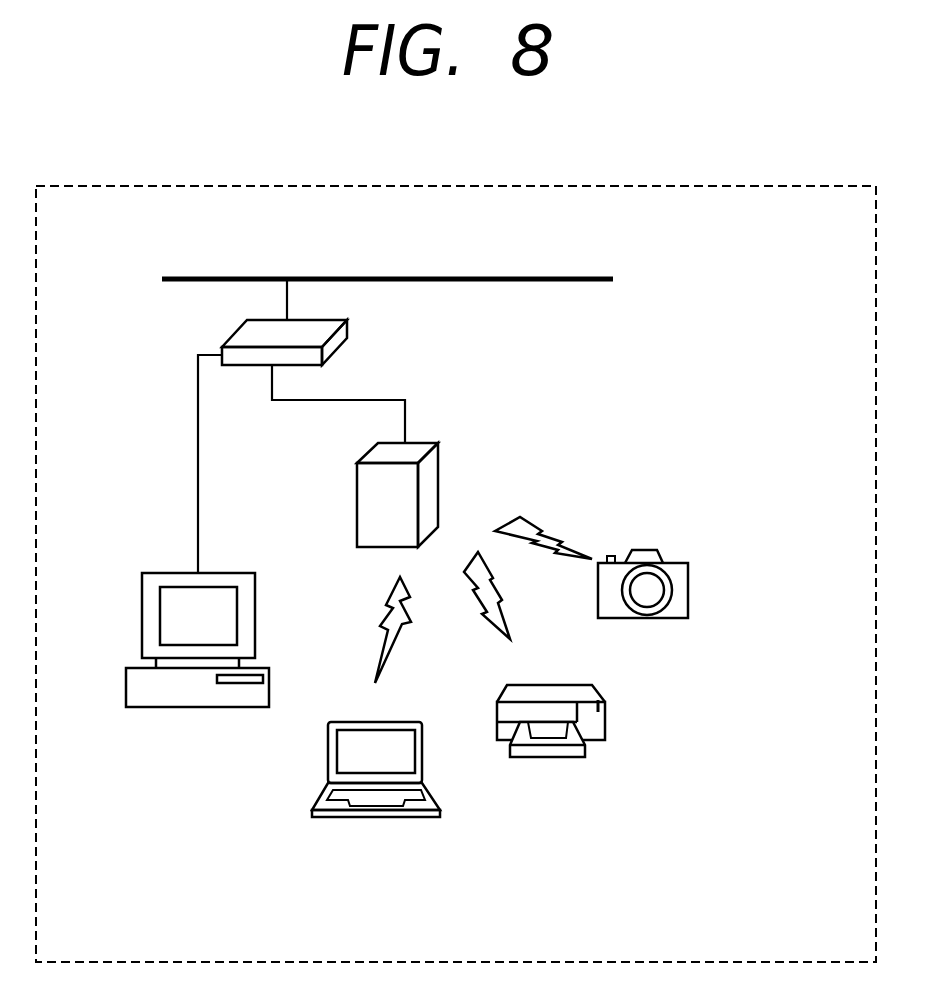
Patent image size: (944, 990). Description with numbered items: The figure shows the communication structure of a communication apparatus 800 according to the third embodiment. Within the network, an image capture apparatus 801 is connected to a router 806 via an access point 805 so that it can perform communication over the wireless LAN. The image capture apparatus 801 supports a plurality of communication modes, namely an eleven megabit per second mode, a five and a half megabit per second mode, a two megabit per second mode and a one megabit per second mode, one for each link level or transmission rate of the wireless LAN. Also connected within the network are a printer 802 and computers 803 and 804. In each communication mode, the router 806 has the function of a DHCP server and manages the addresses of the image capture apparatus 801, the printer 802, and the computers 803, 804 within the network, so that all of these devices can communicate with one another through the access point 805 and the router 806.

The communication apparatus 800 is at (742, 186).
The image capture apparatus 801 is at (688, 580).
The printer 802 is at (605, 718).
The computer 803 is at (355, 818).
The computer 804 is at (195, 707).
The access point 805 is at (438, 447).
The router 806 is at (347, 328).